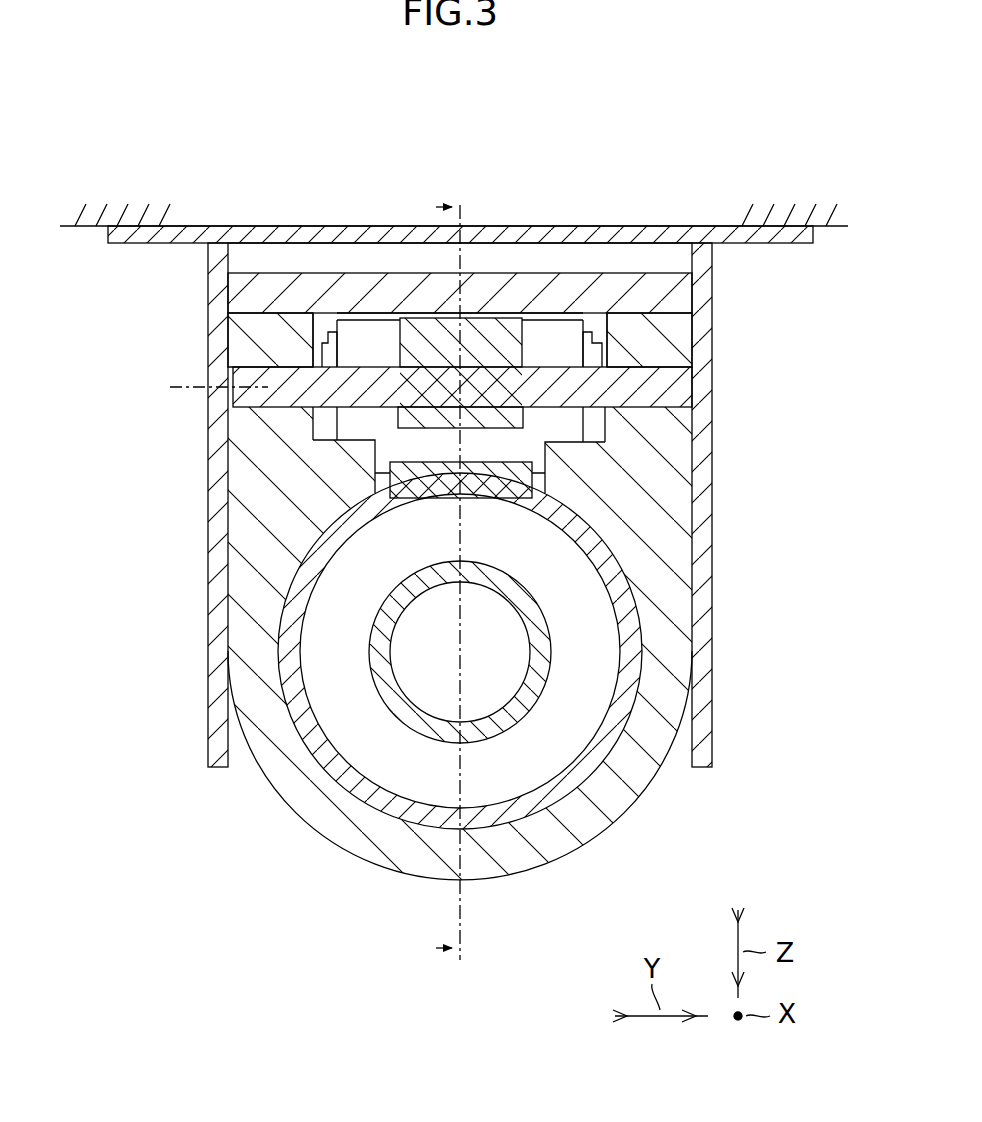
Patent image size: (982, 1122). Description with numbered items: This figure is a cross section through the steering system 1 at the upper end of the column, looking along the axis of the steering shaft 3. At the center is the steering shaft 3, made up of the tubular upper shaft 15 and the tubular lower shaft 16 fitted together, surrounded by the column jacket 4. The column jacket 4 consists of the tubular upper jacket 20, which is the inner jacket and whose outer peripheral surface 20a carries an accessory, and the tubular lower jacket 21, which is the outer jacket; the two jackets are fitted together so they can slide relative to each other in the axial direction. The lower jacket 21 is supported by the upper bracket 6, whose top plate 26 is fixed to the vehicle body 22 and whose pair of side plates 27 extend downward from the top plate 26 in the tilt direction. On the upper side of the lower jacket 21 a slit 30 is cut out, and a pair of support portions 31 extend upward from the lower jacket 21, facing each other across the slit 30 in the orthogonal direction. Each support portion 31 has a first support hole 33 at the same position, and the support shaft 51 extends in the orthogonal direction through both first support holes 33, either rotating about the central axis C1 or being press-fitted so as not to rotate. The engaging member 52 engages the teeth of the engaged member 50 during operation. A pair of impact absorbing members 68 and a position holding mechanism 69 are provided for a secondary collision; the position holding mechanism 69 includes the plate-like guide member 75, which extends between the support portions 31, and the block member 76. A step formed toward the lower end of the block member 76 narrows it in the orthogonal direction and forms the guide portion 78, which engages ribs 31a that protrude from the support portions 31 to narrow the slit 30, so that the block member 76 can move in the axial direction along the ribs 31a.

The steering system 1 is at (452, 1060).
The steering shaft 3 is at (601, 655).
The column jacket 4 is at (509, 722).
The upper bracket 6 is at (460, 456).
The upper shaft 15 is at (533, 702).
The lower shaft 16 is at (513, 652).
The upper jacket 20 is at (390, 808).
The outer peripheral surface 20a is at (603, 527).
The lower jacket 21 is at (325, 815).
The vehicle body 22 is at (117, 216).
The top plate 26 is at (524, 236).
The side plates 27 is at (218, 254).
The slit 30 is at (596, 296).
The support portions 31 is at (244, 325).
The ribs 31a is at (358, 457).
The first support hole 33 is at (286, 362).
The engaged member 50 is at (488, 482).
The support shaft 51 is at (233, 400).
The engaging member 52 is at (484, 315).
The impact absorbing members 68 is at (331, 330).
The position holding mechanism 69 is at (456, 204).
The guide member 75 is at (396, 290).
The block member 76 is at (377, 326).
The guide portion 78 is at (352, 433).
The central axis C1 is at (232, 386).